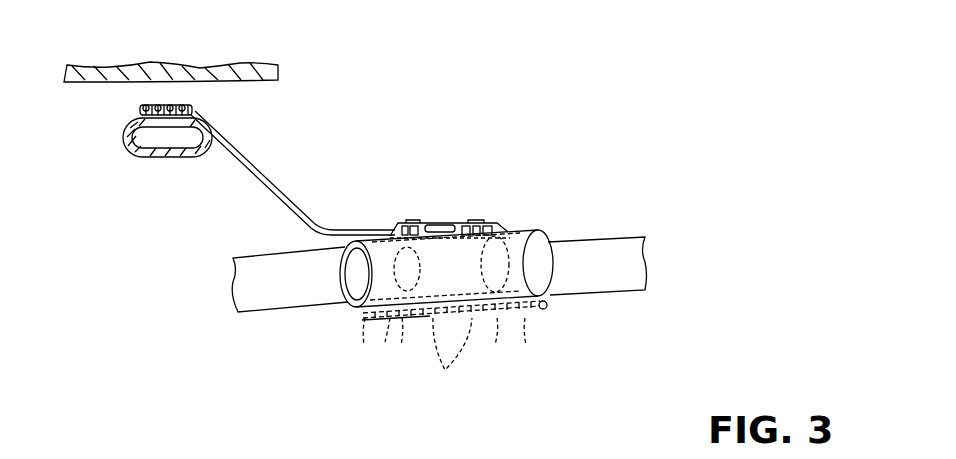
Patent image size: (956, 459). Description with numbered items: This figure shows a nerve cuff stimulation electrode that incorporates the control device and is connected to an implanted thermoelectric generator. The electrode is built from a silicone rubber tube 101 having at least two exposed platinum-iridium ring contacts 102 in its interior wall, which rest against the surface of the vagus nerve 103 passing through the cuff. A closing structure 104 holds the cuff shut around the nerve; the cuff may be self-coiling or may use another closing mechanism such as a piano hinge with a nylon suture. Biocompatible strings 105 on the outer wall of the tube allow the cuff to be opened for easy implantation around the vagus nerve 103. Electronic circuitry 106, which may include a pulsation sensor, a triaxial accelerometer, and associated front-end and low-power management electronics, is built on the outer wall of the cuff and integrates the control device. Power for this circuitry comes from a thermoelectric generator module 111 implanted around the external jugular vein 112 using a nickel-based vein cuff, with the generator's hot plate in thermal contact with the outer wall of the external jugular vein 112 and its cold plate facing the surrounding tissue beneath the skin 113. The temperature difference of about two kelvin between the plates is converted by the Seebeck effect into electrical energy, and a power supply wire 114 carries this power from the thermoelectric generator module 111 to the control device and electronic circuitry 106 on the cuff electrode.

The silicone rubber tube 101 is at (518, 230).
The ring contacts 102 is at (445, 371).
The vagus nerve 103 is at (595, 292).
The closing structure 104 is at (378, 318).
The biocompatible strings 105 is at (505, 318).
The electronic circuitry 106 is at (457, 222).
The Thermoelectric Generator (TEG) module 111 is at (193, 110).
The External Jugular Vein (EJV) 112 is at (170, 135).
The skin 113 is at (148, 72).
The power supply wire 114 is at (247, 153).